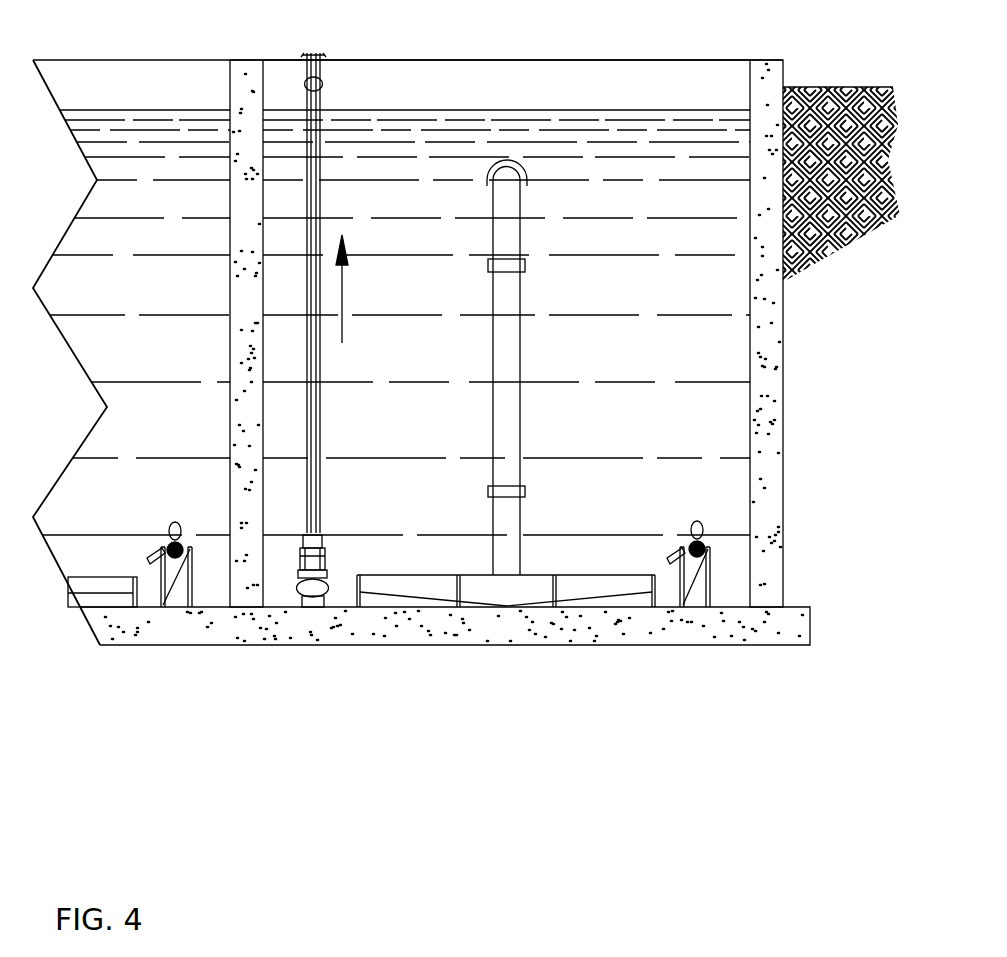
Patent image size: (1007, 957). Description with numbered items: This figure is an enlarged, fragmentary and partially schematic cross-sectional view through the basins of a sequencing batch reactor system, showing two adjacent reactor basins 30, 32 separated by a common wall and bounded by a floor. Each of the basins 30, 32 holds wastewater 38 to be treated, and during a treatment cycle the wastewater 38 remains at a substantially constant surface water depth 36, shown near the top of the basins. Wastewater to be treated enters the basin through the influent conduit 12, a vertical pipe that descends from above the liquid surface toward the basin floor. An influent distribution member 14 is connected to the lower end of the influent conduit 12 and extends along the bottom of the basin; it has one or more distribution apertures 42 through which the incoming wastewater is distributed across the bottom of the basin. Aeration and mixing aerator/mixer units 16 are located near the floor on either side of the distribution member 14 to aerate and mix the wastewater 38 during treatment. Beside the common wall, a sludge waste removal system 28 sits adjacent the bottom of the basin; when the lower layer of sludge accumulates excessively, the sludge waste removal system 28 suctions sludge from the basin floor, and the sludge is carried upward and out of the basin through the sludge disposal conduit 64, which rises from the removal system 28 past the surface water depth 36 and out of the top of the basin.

The influent conduit 12 is at (507, 377).
The influent distribution member 14 is at (506, 570).
The aeration and mixing aerator/mixer 16 is at (172, 533).
The sludge waste removal system 28 is at (320, 552).
The sequencing batch reactor basin 30 is at (156, 94).
The sequencing batch reactor basin 32 is at (688, 94).
The surface water depth 36 is at (405, 105).
The wastewater 38 is at (141, 301).
The distribution aperture 42 is at (383, 606).
The sludge disposal conduit 64 is at (322, 84).